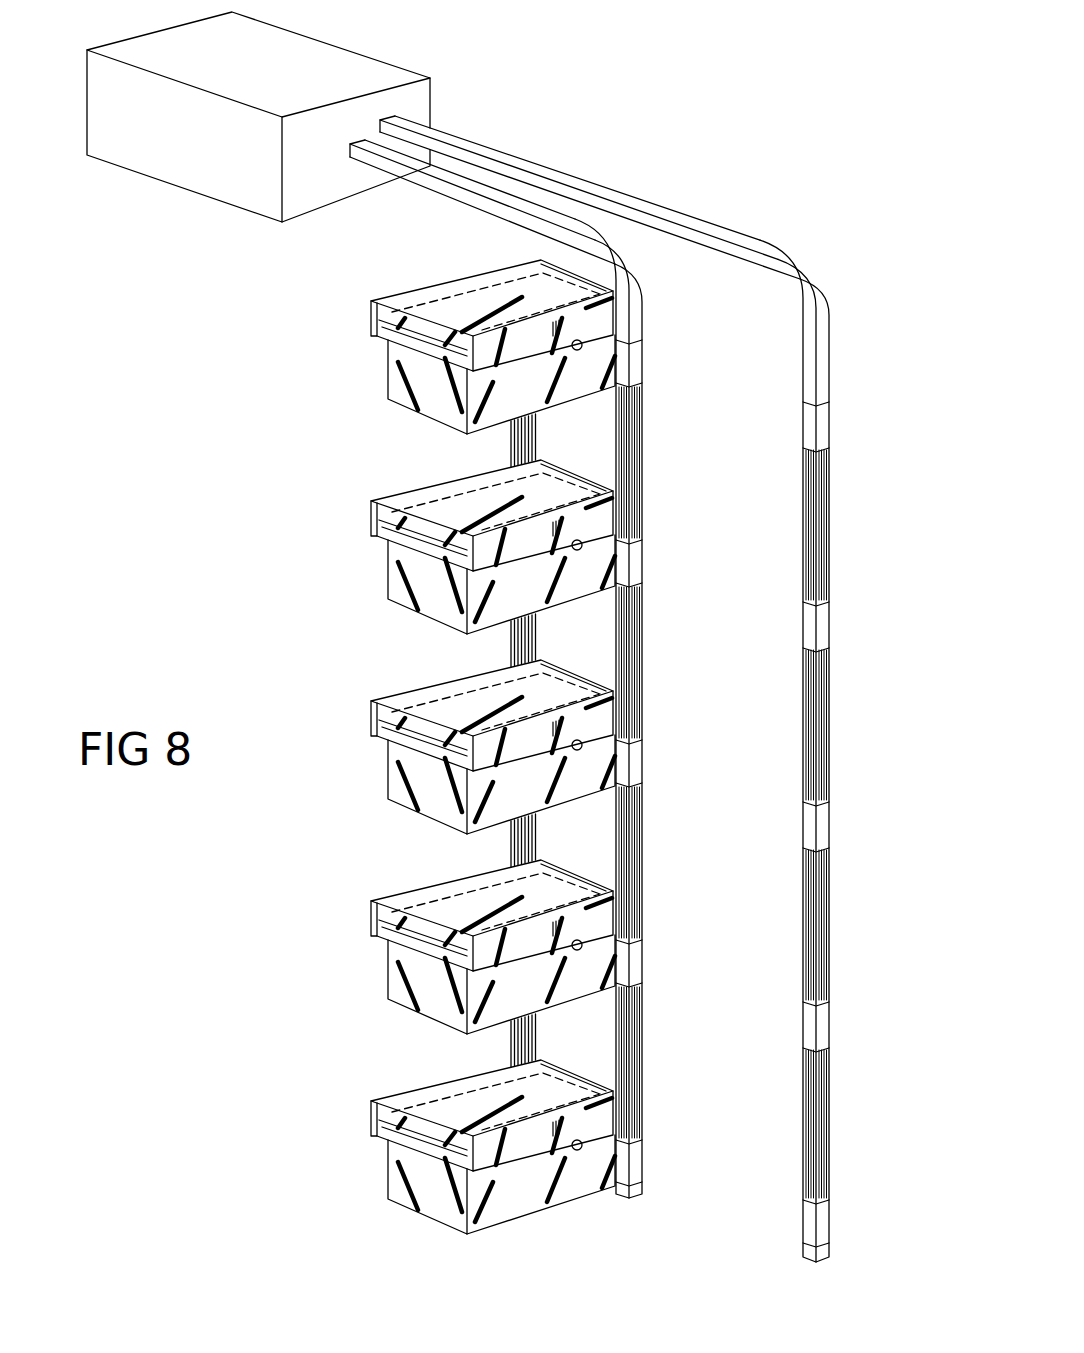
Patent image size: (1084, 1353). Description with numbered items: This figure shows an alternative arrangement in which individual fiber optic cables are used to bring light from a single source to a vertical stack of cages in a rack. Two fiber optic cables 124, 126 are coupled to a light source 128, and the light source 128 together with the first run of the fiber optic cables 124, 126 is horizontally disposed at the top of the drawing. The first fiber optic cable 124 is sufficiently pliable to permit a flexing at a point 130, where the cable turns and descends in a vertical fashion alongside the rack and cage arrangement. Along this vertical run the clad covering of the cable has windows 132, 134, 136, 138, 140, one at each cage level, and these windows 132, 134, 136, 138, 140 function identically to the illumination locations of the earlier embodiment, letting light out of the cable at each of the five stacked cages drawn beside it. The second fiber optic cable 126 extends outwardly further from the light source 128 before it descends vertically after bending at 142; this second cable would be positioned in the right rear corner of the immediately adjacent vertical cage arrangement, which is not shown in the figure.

The fiber optic cable 124 is at (457, 195).
The fiber optic cable 126 is at (567, 177).
The light source 128 is at (415, 101).
The flexing point 130 is at (633, 248).
The window in the cable's clad covering 132 is at (623, 383).
The window in the cable's clad covering 134 is at (623, 581).
The window in the cable's clad covering 136 is at (623, 782).
The window in the cable's clad covering 138 is at (623, 982).
The window in the cable's clad covering 140 is at (623, 1178).
The bend 142 is at (818, 271).